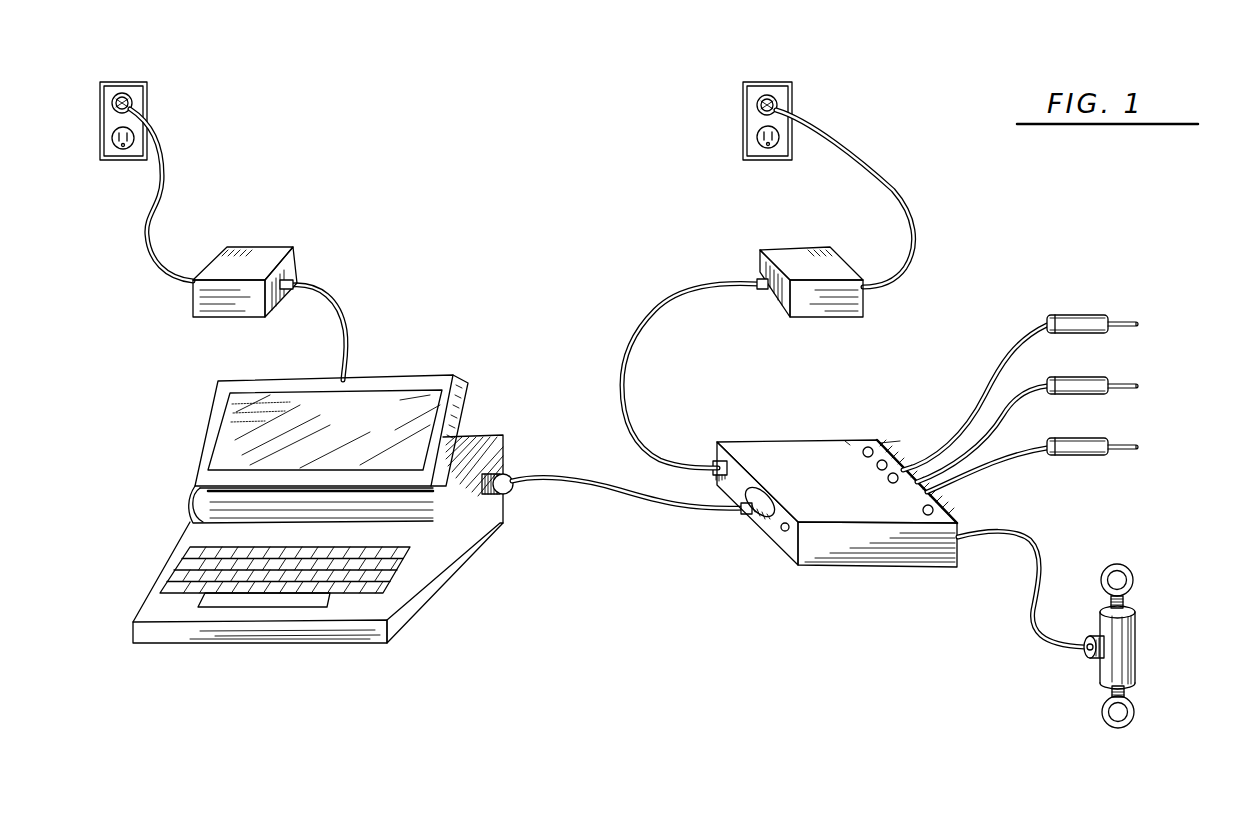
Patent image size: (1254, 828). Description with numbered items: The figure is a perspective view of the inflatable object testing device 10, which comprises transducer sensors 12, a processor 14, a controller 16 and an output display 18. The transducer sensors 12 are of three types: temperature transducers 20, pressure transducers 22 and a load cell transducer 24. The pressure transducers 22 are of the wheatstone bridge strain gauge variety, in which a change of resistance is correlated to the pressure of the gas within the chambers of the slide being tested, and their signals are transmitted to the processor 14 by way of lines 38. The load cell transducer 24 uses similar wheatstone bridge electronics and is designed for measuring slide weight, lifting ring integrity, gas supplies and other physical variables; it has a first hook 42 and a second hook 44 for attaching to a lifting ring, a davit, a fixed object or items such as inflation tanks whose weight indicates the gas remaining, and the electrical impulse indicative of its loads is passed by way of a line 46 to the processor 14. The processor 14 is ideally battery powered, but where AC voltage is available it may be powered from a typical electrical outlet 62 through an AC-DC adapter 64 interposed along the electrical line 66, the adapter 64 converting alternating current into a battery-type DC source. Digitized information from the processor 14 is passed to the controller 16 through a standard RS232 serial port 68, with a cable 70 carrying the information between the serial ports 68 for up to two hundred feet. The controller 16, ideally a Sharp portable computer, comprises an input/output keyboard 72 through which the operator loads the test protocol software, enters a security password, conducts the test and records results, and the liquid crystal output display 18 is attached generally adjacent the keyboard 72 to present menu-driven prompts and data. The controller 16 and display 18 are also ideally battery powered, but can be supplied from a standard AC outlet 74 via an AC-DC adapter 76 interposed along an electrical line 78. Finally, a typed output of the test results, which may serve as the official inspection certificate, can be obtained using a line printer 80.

The inflatable object testing device 10 is at (552, 155).
The transducer sensors 12 is at (1143, 368).
The processor 14 is at (875, 567).
The controller 16 is at (453, 583).
The output display 18 is at (211, 409).
The temperature transducers 20 is at (1130, 323).
The pressure transducers 22 is at (1087, 313).
The load cell transducer 24 is at (1135, 638).
The lines 38 is at (1020, 443).
The first hook 42 is at (1125, 570).
The second hook 44 is at (1107, 720).
The line 46 is at (1027, 627).
The electrical outlet 62 is at (743, 90).
The AC-DC adapter 64 is at (780, 250).
The electrical line 66 is at (910, 207).
The RS232 serial port 68 is at (507, 468).
The cable 70 is at (677, 512).
The input/output keyboard 72 is at (283, 588).
The AC outlet 74 is at (147, 91).
The AC-DC adapter 76 is at (263, 255).
The electrical line 78 is at (163, 178).
The line printer 80 is at (507, 497).